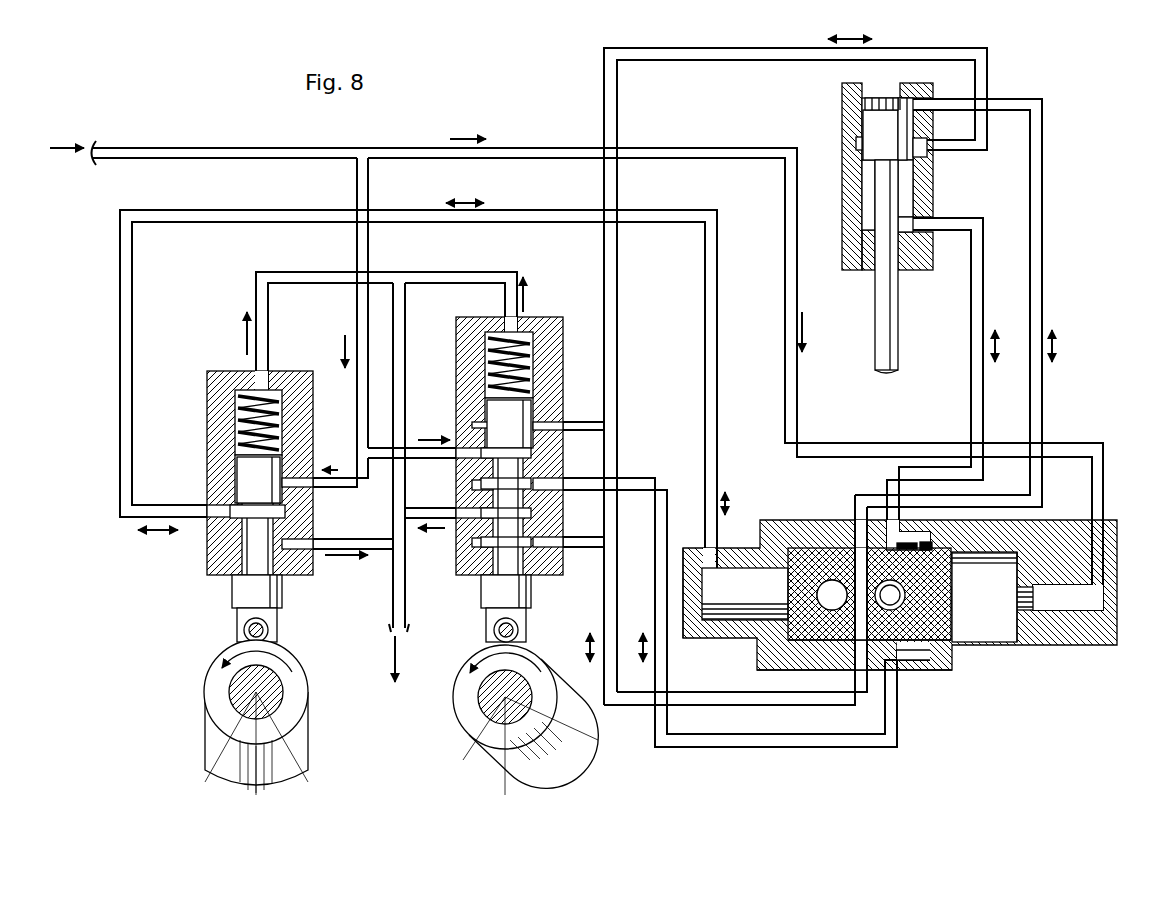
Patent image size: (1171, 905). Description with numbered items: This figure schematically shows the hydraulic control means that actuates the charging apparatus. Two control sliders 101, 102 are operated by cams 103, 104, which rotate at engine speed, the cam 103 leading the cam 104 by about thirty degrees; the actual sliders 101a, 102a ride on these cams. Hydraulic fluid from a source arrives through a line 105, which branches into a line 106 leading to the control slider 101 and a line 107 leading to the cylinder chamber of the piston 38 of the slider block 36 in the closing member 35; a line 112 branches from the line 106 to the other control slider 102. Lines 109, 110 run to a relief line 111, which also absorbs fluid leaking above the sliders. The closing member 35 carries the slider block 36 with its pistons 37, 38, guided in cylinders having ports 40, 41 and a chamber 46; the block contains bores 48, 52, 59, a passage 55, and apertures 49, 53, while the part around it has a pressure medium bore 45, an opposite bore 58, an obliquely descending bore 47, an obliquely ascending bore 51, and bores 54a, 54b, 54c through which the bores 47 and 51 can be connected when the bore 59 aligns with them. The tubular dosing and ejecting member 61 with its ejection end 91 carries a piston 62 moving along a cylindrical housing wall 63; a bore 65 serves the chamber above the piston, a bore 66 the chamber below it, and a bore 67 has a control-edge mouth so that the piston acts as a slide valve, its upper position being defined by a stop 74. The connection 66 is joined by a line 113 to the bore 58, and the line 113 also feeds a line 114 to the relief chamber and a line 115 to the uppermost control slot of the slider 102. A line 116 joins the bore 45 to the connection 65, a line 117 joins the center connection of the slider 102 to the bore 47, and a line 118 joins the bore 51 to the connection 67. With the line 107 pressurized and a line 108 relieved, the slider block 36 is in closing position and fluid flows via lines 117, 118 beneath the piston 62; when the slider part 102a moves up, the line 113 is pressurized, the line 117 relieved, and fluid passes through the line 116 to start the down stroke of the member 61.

The closing member 35 is at (1006, 682).
The slider block 36 is at (808, 563).
The piston 37 is at (737, 582).
The piston 38 is at (1062, 600).
The port 40 is at (703, 550).
The port 41 is at (1103, 556).
The pressure medium bore 45 is at (860, 530).
The chamber 46 is at (984, 597).
The pressure medium bore 47 is at (893, 666).
The bore 48 is at (898, 625).
The aperture 49 is at (902, 600).
The pressure medium bore 51 is at (890, 530).
The bore 52 is at (953, 563).
The aperture 53 is at (898, 583).
The bore 54a is at (955, 553).
The bore 54b is at (918, 545).
The bore 54c is at (905, 656).
The passage 55 is at (817, 596).
The bore 58 is at (862, 662).
The bore 59 is at (862, 628).
The dosing and ejecting member 61 is at (870, 289).
The piston 62 is at (868, 152).
The cylindrical housing wall 63 is at (868, 197).
The bore 65 is at (924, 105).
The bore 66 is at (920, 222).
The bore 67 is at (930, 150).
The stop 74 is at (888, 100).
The ejection end 91 is at (884, 373).
The control slider 101 is at (200, 561).
The slider part 101a is at (262, 597).
The control slider 102 is at (446, 575).
The slider part 102a is at (512, 600).
The cam 103 is at (216, 748).
The cam 104 is at (498, 757).
The line 105 is at (228, 150).
The line 106 is at (358, 190).
The line 107 is at (391, 150).
The line 108 is at (546, 222).
The line 109 is at (378, 541).
The line 110 is at (434, 514).
The relief line 111 is at (404, 328).
The line 112 is at (403, 446).
The line 113 is at (988, 72).
The line 114 is at (598, 541).
The line 115 is at (600, 425).
The line 116 is at (1043, 122).
The line 117 is at (628, 480).
The line 118 is at (964, 224).